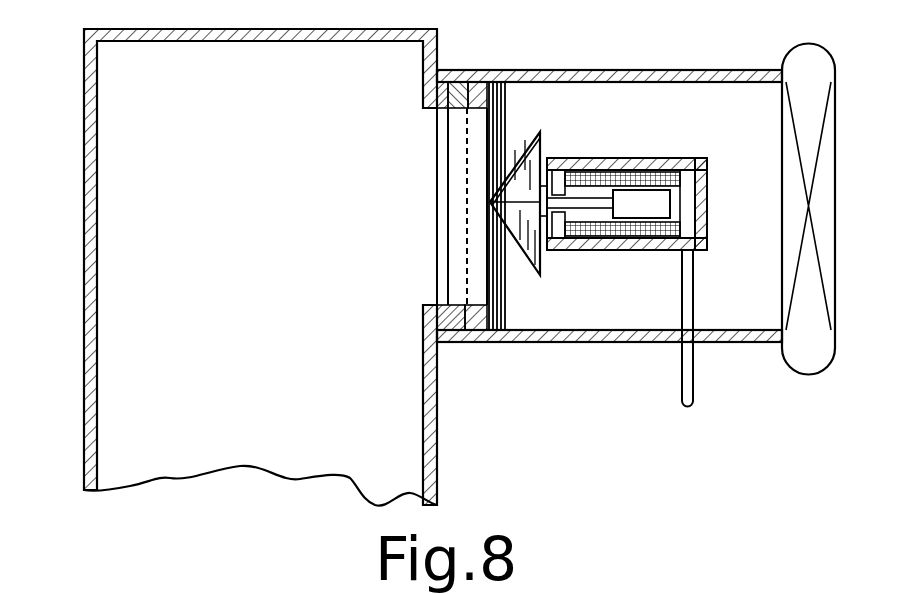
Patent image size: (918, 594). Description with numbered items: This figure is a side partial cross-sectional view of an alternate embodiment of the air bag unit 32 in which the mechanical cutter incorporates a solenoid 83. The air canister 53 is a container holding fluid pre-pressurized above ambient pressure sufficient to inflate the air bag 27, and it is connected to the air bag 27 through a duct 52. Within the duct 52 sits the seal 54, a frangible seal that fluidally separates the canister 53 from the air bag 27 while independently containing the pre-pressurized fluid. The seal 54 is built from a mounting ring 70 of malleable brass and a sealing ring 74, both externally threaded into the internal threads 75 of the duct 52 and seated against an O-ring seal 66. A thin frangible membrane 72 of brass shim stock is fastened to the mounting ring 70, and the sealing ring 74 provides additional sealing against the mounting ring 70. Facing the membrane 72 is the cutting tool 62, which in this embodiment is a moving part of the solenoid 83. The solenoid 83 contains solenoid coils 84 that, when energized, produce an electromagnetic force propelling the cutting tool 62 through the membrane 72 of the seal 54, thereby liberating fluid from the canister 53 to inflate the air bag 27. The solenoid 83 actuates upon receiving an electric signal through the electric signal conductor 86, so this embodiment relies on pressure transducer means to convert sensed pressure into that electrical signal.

The air bag 27 is at (820, 45).
The air bag unit 32 is at (80, 224).
The duct 52 is at (608, 70).
The air canister 53 is at (84, 57).
The seal 54 is at (447, 265).
The cutting tool 62 is at (527, 256).
The O-ring seal 66 is at (437, 302).
The mounting ring 70 is at (452, 112).
The membrane 72 is at (466, 200).
The sealing ring 74 is at (477, 108).
The internal threads 75 is at (505, 95).
The solenoid 83 is at (707, 227).
The solenoid coils 84 is at (678, 182).
The electric signal conductor 86 is at (693, 373).